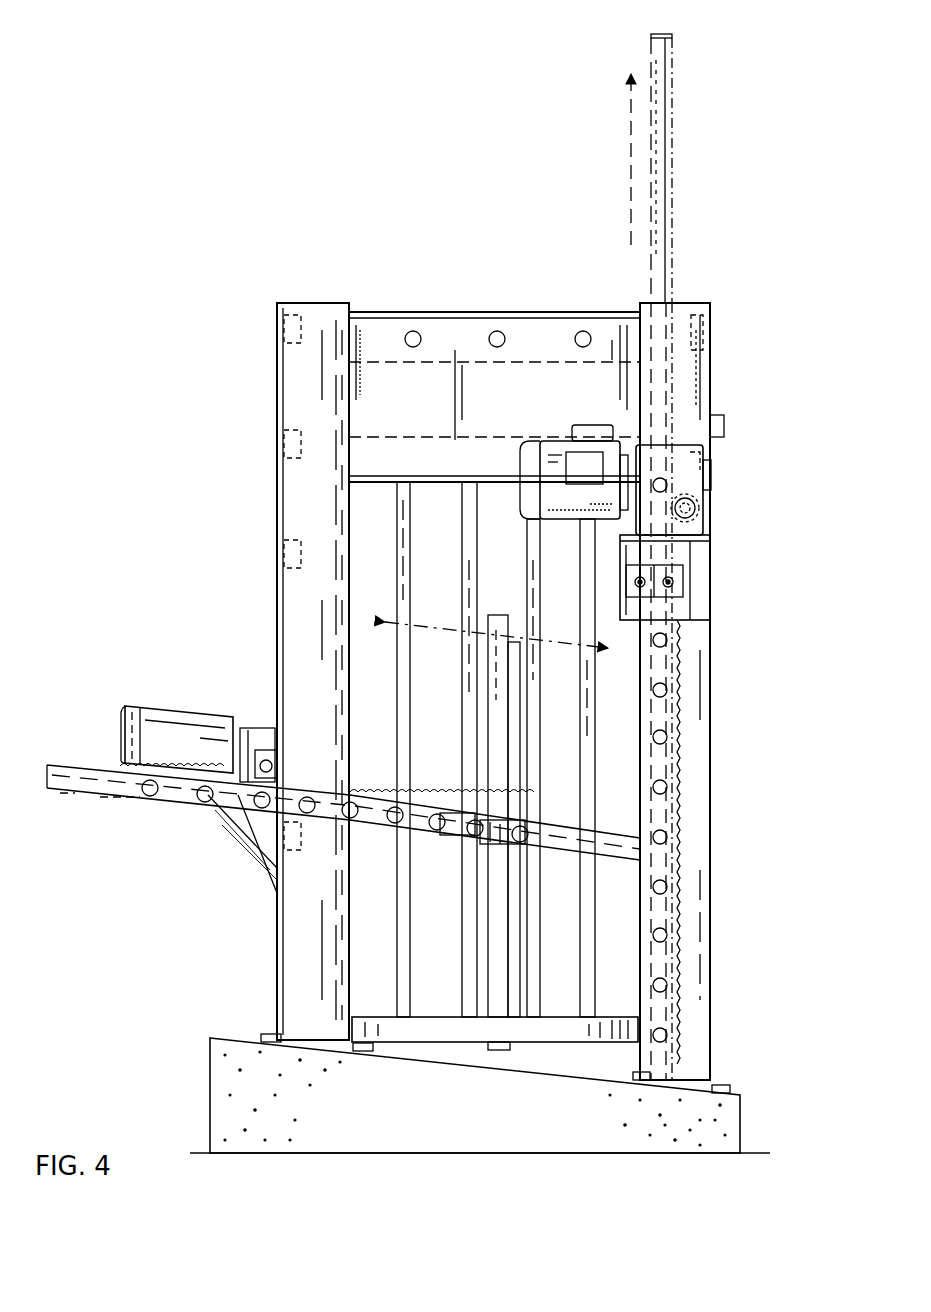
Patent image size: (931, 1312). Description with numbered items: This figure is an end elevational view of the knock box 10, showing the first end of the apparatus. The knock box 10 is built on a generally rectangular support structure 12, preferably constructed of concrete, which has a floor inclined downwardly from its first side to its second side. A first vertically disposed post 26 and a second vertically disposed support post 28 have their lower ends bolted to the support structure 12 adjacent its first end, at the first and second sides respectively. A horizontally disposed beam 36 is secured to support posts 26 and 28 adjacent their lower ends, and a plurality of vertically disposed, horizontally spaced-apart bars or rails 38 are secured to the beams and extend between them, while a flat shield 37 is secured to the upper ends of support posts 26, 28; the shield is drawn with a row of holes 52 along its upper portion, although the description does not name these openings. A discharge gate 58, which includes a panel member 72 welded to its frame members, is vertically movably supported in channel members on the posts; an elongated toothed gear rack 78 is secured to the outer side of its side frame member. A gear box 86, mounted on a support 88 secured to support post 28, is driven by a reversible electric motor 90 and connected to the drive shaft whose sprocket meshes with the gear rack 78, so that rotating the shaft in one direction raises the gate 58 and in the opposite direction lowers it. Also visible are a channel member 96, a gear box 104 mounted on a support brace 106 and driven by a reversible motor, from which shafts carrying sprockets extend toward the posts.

The knock box 10 is at (425, 268).
The support structure 12 is at (372, 1125).
The first vertically disposed post 26 is at (300, 915).
The second vertically disposed support post 28 is at (700, 1001).
The horizontally disposed beam 36 is at (548, 1035).
The flat shield 37 is at (397, 338).
The bars or rails 38 is at (400, 553).
The holes 52 is at (578, 332).
The discharge gate 58 is at (660, 40).
The panel member 72 is at (690, 918).
The toothed gear rack 78 is at (690, 878).
The gear box 86 is at (676, 452).
The support 88 is at (707, 540).
The reversible electric motor 90 is at (545, 488).
The channel member 96 is at (130, 800).
The gear box 104 is at (262, 738).
The support brace 106 is at (250, 835).